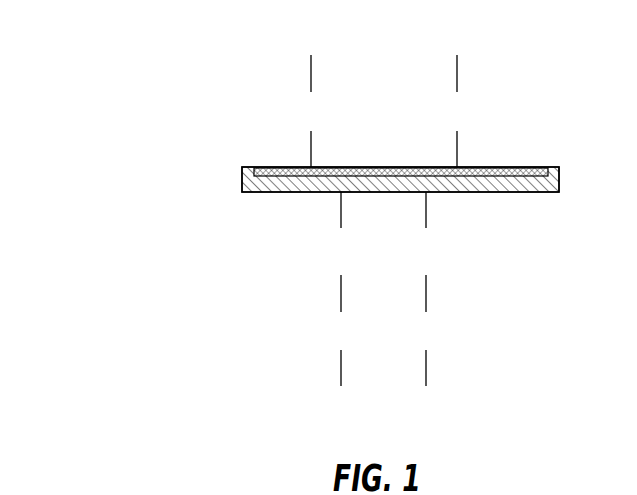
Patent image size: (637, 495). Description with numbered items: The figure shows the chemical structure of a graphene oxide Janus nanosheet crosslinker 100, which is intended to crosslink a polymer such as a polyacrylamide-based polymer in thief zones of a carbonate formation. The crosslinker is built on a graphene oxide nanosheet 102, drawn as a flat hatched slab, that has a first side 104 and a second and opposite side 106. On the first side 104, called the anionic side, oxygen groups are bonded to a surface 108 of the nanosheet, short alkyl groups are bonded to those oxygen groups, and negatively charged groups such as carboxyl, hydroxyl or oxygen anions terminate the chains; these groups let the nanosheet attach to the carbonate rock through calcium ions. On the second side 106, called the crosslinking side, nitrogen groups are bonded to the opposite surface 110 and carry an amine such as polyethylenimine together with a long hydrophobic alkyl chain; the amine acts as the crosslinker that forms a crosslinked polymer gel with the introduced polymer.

The graphene oxide Janus nanosheet crosslinker 100 is at (323, 216).
The graphene oxide nanosheet 102 is at (410, 182).
The first side 104 is at (451, 310).
The second side 106 is at (452, 91).
The surface 108 is at (379, 199).
The opposite surface 110 is at (374, 155).